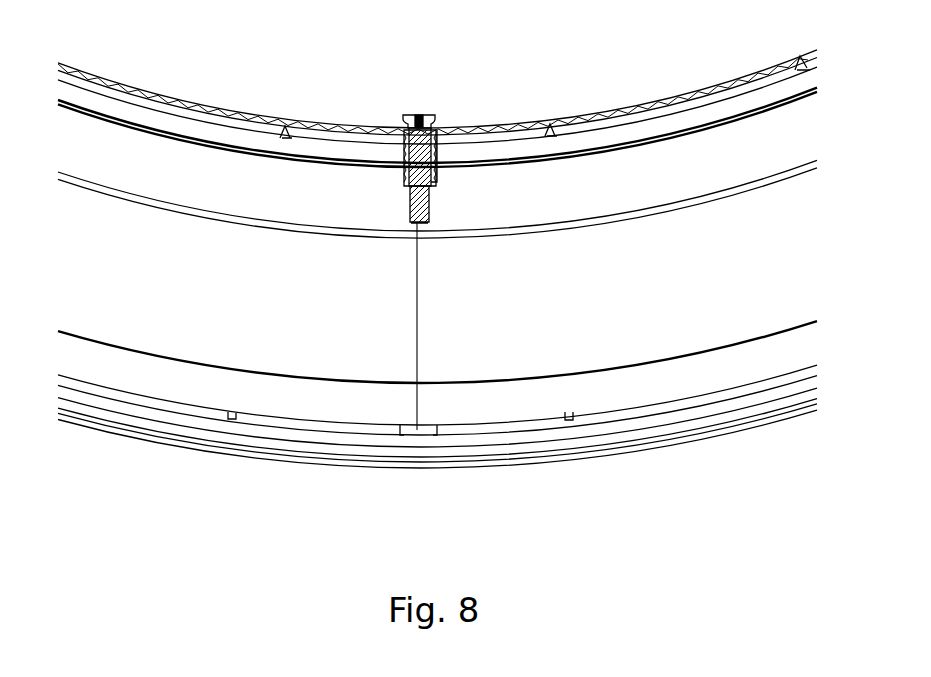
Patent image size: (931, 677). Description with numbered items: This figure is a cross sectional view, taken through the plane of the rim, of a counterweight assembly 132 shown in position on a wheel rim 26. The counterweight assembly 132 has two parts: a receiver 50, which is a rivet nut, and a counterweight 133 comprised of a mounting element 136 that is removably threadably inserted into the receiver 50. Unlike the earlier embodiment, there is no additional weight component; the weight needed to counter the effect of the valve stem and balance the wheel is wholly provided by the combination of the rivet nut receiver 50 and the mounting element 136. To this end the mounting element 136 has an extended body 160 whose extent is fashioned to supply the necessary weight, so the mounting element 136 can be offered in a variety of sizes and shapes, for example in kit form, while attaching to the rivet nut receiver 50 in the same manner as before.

The wheel rim 26 is at (567, 410).
The receiver 50 is at (433, 180).
The counterweight assembly 132 is at (454, 98).
The counterweight 133 is at (427, 112).
The mounting element 136 is at (410, 114).
The extended body 160 is at (405, 197).